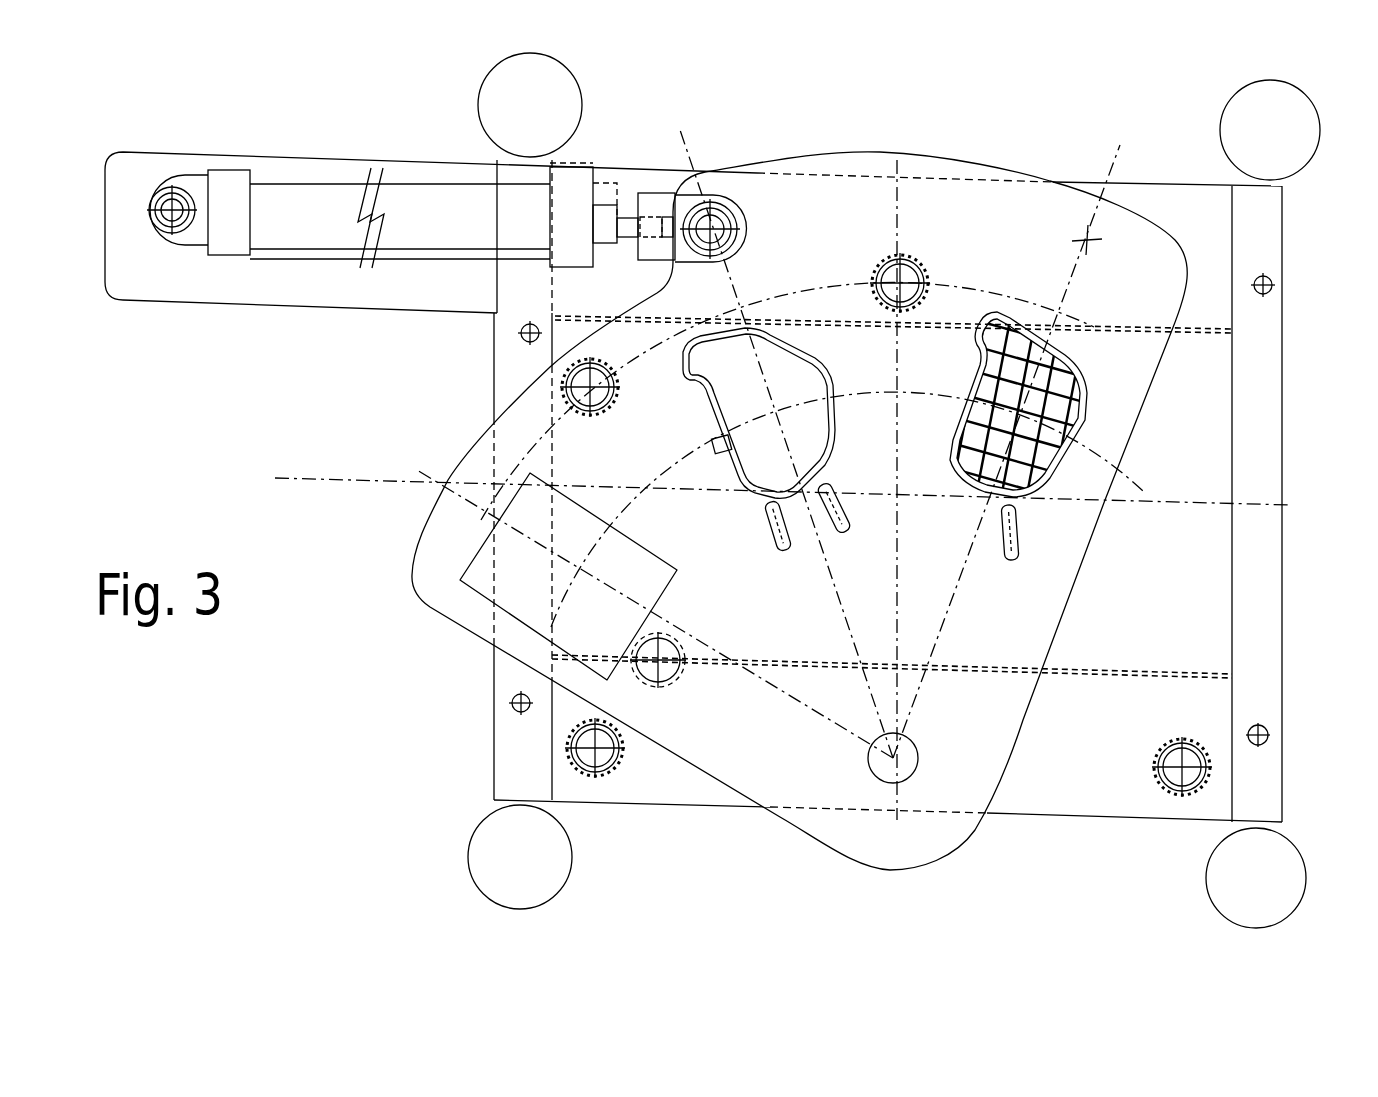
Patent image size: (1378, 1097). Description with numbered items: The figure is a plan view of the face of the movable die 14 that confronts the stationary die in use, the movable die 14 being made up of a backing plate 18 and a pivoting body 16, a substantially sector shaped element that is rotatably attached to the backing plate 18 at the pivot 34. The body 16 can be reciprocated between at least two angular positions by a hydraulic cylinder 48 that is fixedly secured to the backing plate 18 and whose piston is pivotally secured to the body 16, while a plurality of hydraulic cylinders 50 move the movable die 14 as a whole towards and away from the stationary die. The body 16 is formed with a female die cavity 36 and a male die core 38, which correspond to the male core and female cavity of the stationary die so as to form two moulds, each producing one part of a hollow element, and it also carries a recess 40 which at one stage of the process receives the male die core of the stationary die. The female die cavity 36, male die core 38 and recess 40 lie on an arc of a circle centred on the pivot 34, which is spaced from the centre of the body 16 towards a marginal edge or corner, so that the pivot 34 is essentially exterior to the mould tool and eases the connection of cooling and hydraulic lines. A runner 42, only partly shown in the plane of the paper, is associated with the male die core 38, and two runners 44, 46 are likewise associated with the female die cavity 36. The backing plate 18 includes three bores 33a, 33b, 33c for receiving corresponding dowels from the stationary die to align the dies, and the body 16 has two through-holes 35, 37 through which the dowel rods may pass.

The movable die 14 is at (318, 646).
The pivoting body 16 is at (445, 615).
The backing plate 18 is at (518, 783).
The bore 33a is at (910, 277).
The bore 33b is at (610, 757).
The bore 33c is at (1152, 753).
The pivot 34 is at (915, 762).
The through-hole 35 is at (880, 265).
The female die cavity 36 is at (752, 497).
The through-hole 37 is at (580, 360).
The male die core 38 is at (1082, 375).
The recess 40 is at (640, 560).
The runner 42 is at (1017, 540).
The runner 44 is at (787, 553).
The runner 46 is at (842, 533).
The hydraulic cylinder 48 is at (415, 205).
The hydraulic cylinders 50 is at (573, 110).